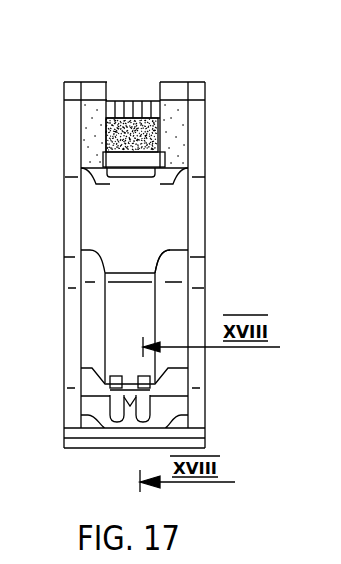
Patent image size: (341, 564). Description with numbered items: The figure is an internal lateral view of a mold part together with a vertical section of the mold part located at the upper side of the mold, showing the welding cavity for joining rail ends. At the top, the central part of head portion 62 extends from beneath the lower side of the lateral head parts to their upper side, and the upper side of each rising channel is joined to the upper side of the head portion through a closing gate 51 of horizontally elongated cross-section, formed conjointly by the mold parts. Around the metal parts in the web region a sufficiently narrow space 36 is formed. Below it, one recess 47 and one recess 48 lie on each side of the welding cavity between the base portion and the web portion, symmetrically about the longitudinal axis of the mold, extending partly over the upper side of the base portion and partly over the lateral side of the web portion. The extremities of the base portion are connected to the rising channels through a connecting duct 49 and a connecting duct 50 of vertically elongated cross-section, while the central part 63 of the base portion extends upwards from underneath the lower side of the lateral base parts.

The space 36 is at (140, 310).
The recess 47 is at (84, 368).
The recess 48 is at (172, 374).
The connecting duct 49 is at (108, 406).
The connecting duct 50 is at (153, 408).
The closing gate 51 is at (140, 177).
The central part of head portion 62 is at (163, 253).
The central part of base portion 63 is at (108, 428).